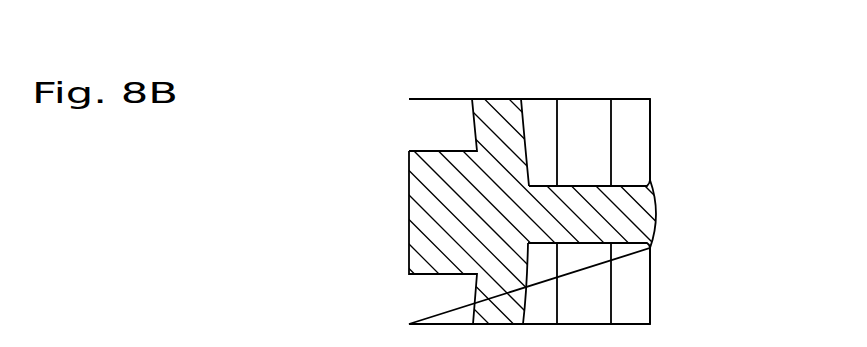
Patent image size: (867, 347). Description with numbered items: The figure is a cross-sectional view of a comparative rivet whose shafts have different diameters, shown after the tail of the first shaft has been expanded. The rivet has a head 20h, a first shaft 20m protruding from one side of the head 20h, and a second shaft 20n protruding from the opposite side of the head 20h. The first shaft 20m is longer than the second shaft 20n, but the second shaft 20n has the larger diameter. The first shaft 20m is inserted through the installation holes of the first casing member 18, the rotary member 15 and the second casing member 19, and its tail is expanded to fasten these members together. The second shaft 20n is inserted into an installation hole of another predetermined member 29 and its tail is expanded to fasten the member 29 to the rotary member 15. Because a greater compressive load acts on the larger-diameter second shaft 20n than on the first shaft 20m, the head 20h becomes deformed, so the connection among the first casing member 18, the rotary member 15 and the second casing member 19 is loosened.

The predetermined member 29 is at (420, 122).
The second shaft 20n is at (415, 195).
The head 20h is at (500, 104).
The first casing member 18 is at (543, 107).
The rotary member 15 is at (583, 110).
The second casing member 19 is at (633, 109).
The first shaft 20m is at (656, 205).